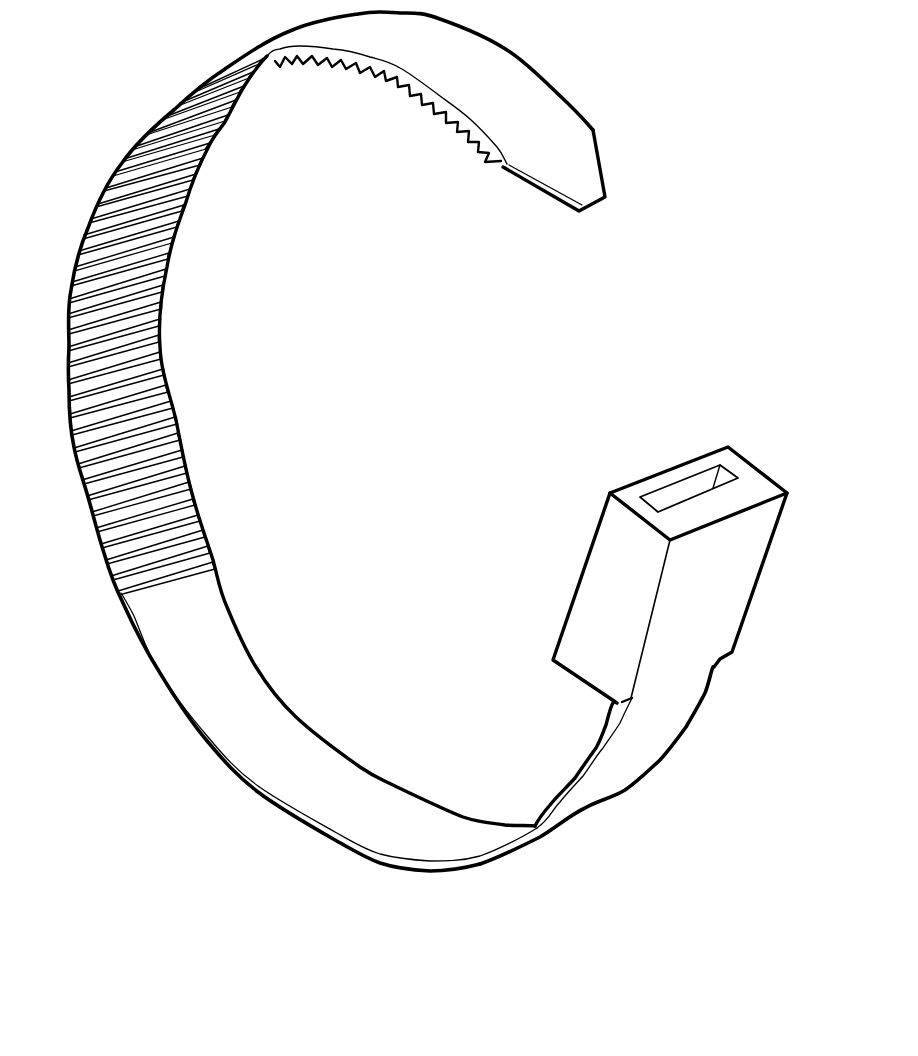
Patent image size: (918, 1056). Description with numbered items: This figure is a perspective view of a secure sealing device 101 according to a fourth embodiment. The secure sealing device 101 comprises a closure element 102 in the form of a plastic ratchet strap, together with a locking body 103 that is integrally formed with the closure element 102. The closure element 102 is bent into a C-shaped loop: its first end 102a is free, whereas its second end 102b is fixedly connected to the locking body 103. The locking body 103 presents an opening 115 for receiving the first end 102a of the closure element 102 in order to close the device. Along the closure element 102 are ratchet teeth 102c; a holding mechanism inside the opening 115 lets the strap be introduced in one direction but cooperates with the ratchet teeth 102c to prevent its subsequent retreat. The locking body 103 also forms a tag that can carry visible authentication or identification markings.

The secure sealing device 101 is at (669, 240).
The closure element 102 is at (265, 687).
The first end 102a is at (579, 146).
The second end 102b is at (683, 708).
The ratchet teeth 102c is at (127, 350).
The locking body 103 is at (732, 563).
The opening 115 is at (684, 488).